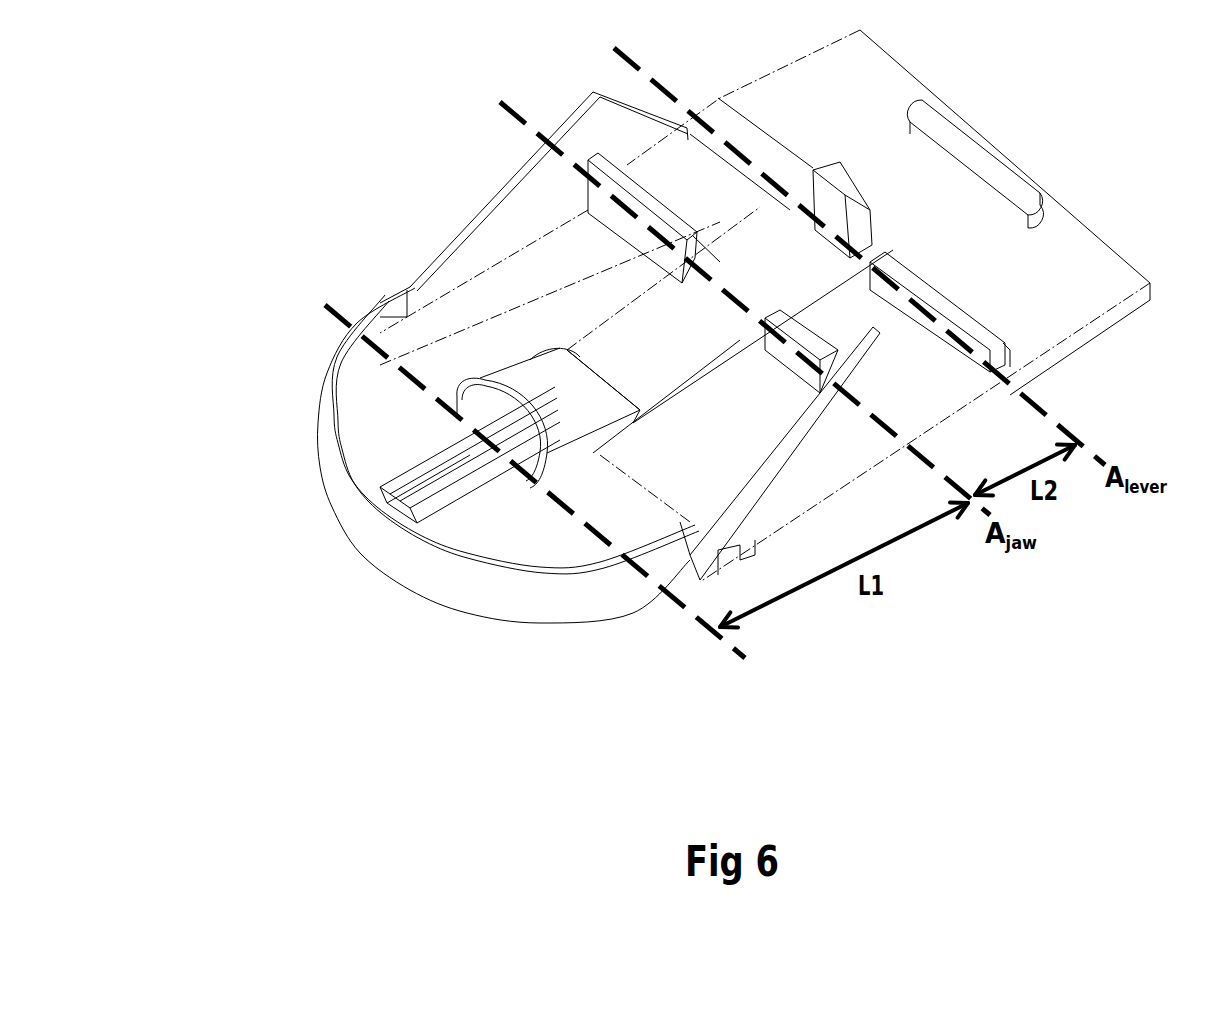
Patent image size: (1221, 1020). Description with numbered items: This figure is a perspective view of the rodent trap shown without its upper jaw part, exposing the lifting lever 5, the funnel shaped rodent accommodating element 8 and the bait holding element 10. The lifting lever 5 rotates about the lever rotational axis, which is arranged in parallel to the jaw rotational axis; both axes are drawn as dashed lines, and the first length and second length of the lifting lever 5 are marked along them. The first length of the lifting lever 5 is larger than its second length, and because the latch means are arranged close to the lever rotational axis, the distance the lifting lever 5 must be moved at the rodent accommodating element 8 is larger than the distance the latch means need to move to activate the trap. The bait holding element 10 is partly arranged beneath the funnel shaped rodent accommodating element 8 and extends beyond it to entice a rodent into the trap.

The lifting lever 5 is at (600, 333).
The funnel shaped rodent accommodating element 8 is at (563, 466).
The bait holding element 10 is at (387, 505).